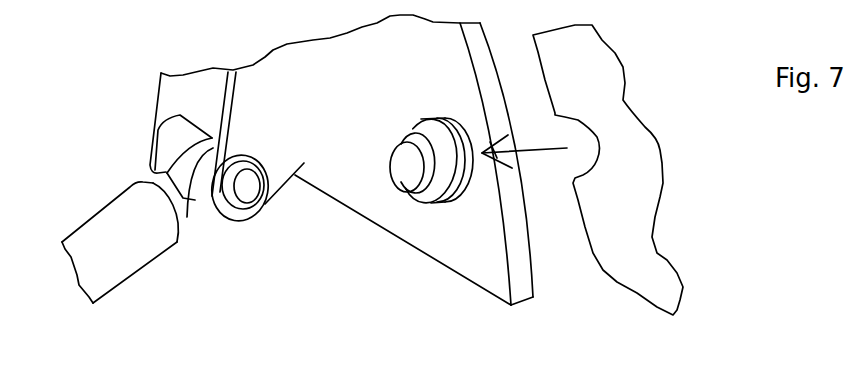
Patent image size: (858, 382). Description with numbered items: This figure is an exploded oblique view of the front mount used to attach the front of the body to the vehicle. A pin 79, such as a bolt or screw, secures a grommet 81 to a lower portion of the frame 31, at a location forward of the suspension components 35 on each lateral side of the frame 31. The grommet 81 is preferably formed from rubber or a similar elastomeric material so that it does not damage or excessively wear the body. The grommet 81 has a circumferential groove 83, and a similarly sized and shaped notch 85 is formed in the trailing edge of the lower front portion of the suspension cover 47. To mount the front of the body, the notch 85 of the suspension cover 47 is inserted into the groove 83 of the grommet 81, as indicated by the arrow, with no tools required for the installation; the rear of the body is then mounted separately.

The frame 31 is at (360, 190).
The suspension components 35 is at (122, 265).
The suspension cover 47 is at (645, 168).
The pin 79 is at (408, 172).
The grommet 81 is at (405, 127).
The circumferential groove 83 is at (449, 126).
The notch 85 is at (598, 137).